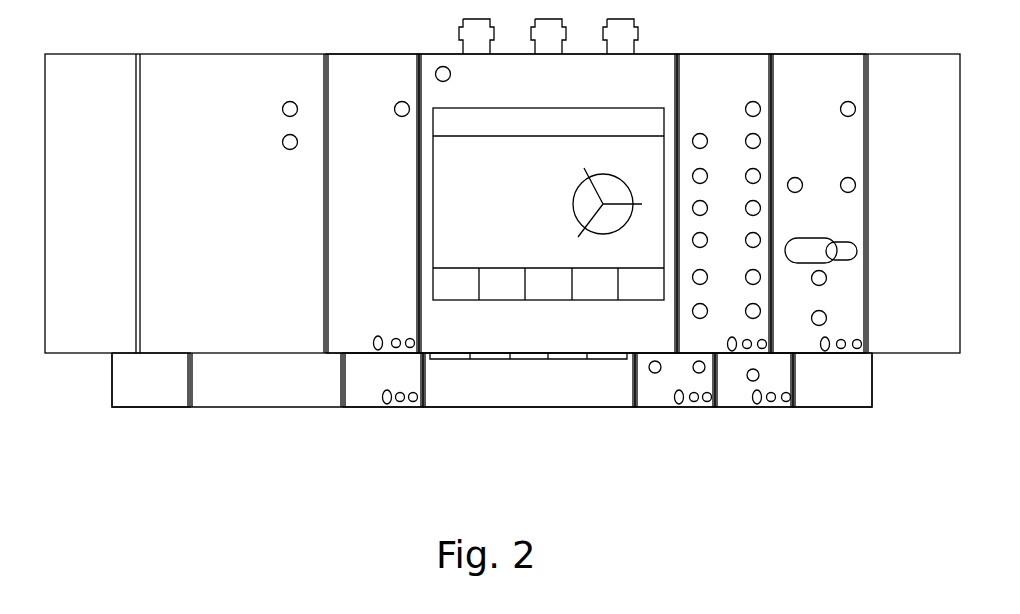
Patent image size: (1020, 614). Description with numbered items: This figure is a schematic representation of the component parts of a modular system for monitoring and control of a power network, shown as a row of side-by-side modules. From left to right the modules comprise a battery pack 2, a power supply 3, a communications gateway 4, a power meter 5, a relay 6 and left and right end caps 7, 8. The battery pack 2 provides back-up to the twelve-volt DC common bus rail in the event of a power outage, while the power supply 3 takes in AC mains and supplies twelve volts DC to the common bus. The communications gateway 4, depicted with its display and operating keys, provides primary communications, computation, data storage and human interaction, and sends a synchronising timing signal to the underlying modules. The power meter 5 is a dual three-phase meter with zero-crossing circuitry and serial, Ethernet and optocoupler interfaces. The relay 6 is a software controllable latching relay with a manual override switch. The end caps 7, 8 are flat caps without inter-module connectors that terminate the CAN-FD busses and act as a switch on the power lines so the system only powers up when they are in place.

The battery pack 2 is at (275, 383).
The power supply 3 is at (370, 383).
The communications gateway 4 is at (543, 385).
The power meter 5 is at (661, 392).
The relay 6 is at (735, 395).
The end cap 7 is at (163, 383).
The end cap 8 is at (827, 402).